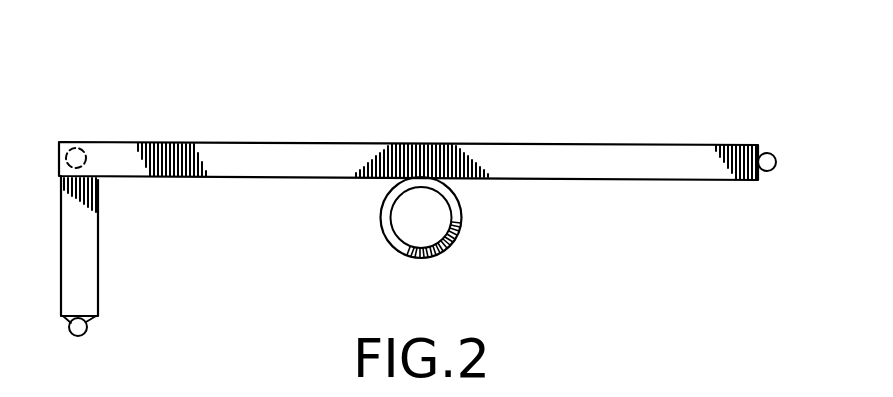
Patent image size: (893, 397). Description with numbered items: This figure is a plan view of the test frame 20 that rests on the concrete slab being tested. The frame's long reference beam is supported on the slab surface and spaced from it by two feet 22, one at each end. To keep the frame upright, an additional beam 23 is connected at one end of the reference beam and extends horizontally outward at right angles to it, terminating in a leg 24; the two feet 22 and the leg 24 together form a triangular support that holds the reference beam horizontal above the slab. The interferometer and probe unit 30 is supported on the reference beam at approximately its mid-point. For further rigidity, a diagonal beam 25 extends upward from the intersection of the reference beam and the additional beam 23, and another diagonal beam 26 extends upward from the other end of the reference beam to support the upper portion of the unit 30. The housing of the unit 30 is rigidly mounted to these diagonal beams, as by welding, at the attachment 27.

The test frame 20 is at (181, 115).
The feet 22 is at (75, 152).
The additional beam 23 is at (85, 267).
The leg 24 is at (86, 326).
The diagonal beam 25 is at (258, 142).
The diagonal beam 26 is at (562, 144).
The attachment 27 is at (394, 144).
The interferometer and probe unit 30 is at (394, 260).